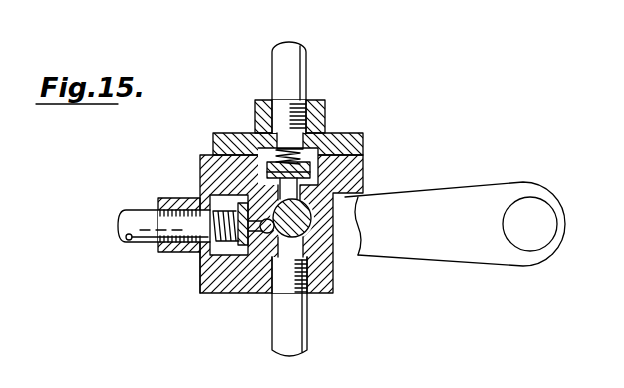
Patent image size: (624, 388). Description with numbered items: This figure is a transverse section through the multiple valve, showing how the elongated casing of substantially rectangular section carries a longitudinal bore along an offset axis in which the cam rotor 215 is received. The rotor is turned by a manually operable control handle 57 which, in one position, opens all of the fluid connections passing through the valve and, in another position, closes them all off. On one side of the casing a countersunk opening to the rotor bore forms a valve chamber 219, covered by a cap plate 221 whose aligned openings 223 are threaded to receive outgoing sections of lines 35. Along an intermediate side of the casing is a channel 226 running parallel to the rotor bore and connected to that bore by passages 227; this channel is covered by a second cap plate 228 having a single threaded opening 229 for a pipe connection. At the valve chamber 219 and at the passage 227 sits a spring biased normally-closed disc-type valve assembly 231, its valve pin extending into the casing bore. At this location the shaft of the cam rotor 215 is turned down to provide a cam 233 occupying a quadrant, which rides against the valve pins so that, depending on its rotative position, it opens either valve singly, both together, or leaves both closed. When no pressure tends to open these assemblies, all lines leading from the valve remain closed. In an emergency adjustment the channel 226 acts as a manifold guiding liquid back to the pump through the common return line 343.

The lines 35 is at (280, 69).
The aligned openings 223 is at (283, 120).
The cap plate 221 is at (225, 135).
The valve assembly 231 is at (243, 213).
The valve chambers 219 is at (316, 173).
The control handle 57 is at (476, 198).
The threaded opening 229 is at (178, 212).
The common return line 343 is at (137, 238).
The cap plate 228 is at (202, 272).
The channel 226 is at (235, 253).
The passages 227 is at (251, 246).
The cam 233 is at (346, 252).
The cam rotor 215 is at (332, 287).